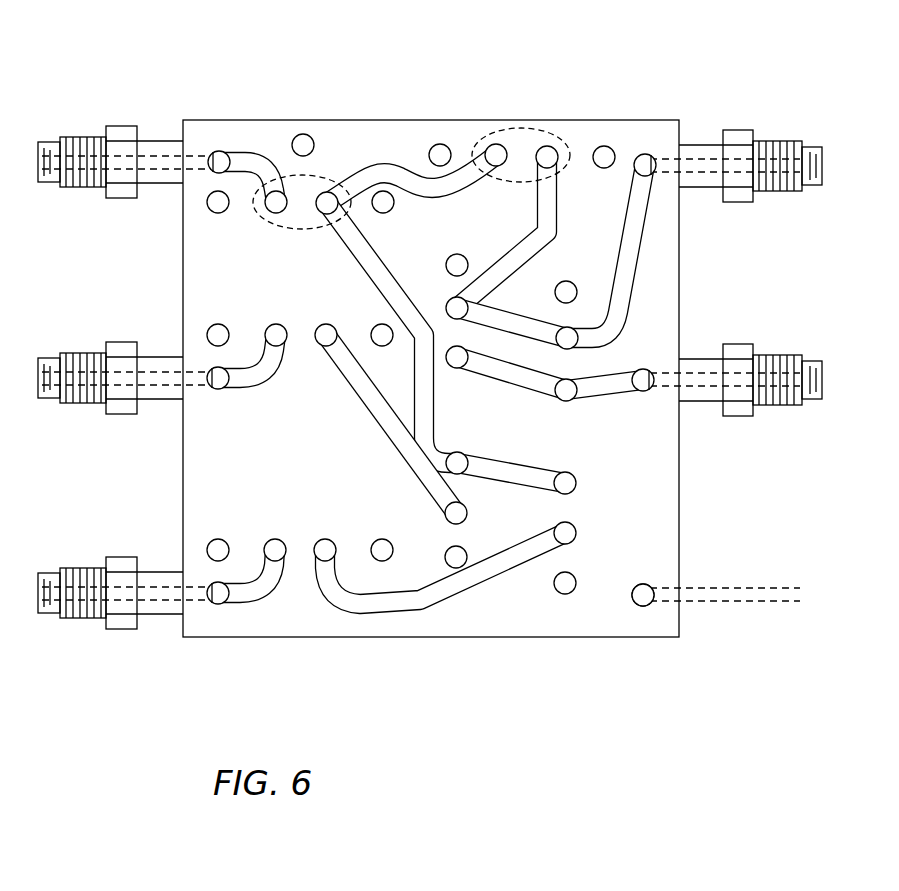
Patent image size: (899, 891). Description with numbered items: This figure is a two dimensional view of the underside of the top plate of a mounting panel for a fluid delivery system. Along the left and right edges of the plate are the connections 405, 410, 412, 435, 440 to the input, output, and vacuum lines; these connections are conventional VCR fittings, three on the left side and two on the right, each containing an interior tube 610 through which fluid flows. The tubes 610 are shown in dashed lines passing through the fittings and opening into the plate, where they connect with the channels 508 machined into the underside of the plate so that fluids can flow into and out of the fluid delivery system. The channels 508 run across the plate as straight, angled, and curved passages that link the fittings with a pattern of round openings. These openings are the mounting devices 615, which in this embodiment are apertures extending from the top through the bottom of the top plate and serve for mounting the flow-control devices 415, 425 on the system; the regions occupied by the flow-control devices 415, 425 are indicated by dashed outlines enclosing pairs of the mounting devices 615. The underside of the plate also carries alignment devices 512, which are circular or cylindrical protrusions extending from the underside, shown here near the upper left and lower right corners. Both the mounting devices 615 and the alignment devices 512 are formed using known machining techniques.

The connection 405 is at (90, 190).
The connection 410 is at (80, 403).
The connection 412 is at (75, 618).
The connection 435 is at (740, 203).
The connection 440 is at (740, 416).
The flow-control device 415 is at (330, 185).
The flow-control device 425 is at (538, 128).
The channels 508 is at (248, 152).
The alignment devices 512 is at (307, 134).
The interior tubes 610 is at (150, 188).
The mounting devices 615 is at (442, 144).